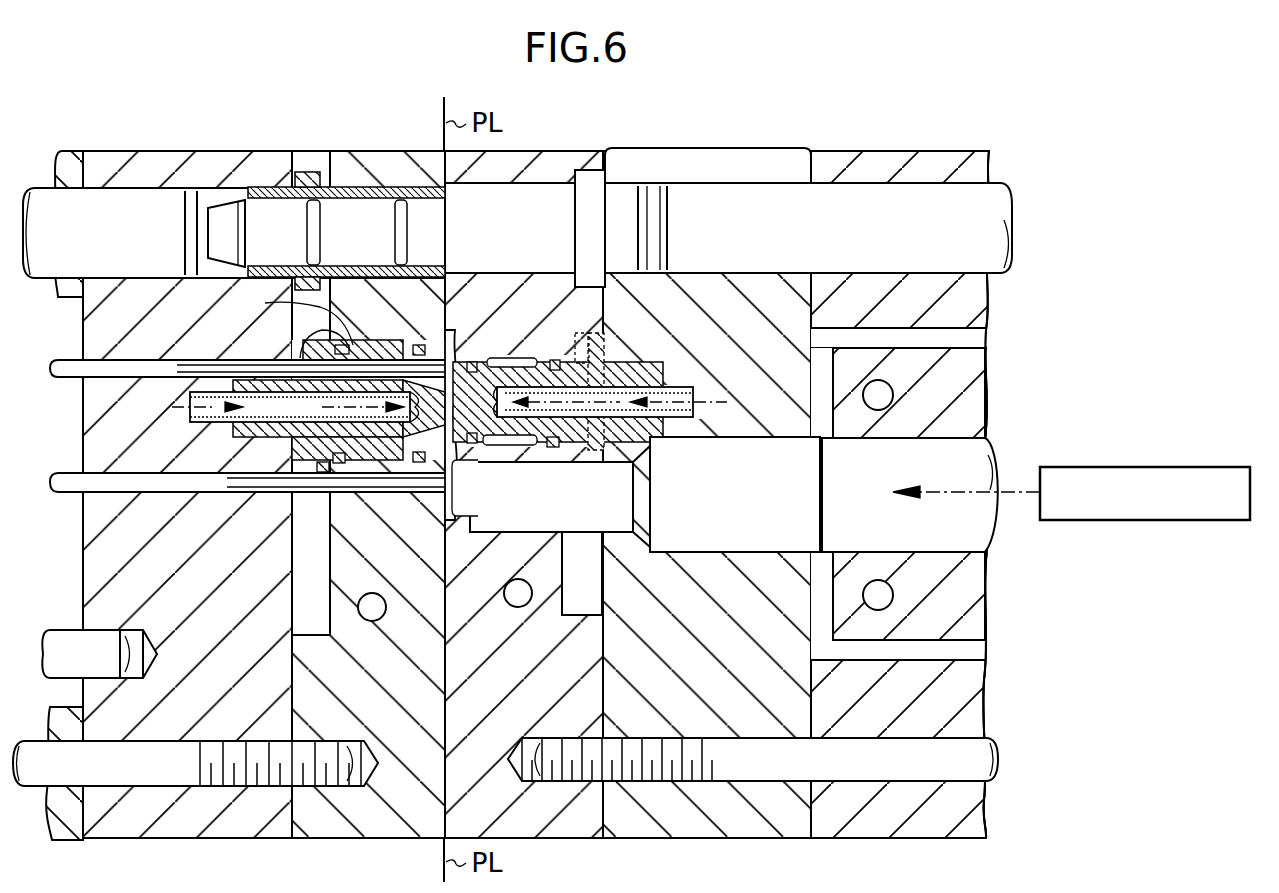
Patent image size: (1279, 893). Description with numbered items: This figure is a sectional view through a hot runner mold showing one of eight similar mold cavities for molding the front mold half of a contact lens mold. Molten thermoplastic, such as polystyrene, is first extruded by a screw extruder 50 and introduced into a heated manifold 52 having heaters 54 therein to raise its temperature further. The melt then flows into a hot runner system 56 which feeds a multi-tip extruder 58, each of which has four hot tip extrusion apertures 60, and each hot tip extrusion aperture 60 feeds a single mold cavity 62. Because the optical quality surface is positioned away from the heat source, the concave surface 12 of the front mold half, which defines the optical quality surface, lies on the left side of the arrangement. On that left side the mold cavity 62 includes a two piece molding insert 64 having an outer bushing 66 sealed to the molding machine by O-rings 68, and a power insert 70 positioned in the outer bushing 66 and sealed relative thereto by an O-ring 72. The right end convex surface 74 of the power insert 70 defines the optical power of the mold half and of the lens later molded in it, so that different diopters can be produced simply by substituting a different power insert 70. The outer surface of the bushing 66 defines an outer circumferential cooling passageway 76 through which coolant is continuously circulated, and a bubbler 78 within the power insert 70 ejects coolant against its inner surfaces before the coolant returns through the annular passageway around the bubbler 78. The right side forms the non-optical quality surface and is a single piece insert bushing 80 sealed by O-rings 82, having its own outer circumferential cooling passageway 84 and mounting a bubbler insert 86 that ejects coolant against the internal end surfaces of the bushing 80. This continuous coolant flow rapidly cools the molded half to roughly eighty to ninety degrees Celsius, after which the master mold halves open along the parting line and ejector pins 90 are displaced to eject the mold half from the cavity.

The concave surface 12 is at (428, 352).
The screw extruder 50 is at (1143, 467).
The heated manifold 52 is at (878, 440).
The heaters 54 is at (893, 393).
The hot runner system 56 is at (724, 487).
The multi-tip extruder 58 is at (579, 533).
The hot tip extrusion aperture 60 is at (464, 474).
The mold cavity 62 is at (452, 334).
The two piece molding insert 64 is at (353, 345).
The outer bushing 66 is at (277, 508).
The O-rings 68 is at (422, 264).
The power insert 70 is at (452, 335).
The O-ring 72 is at (403, 465).
The convex surface 74 is at (392, 350).
The outer circumferential cooling passageway 76 is at (366, 266).
The bubbler 78 is at (277, 430).
The single piece insert bushing 80 is at (545, 362).
The O-rings 82 is at (484, 360).
The outer circumferential cooling passageway 84 is at (513, 360).
The bubbler insert 86 is at (630, 386).
The ejector pins 90 is at (207, 358).